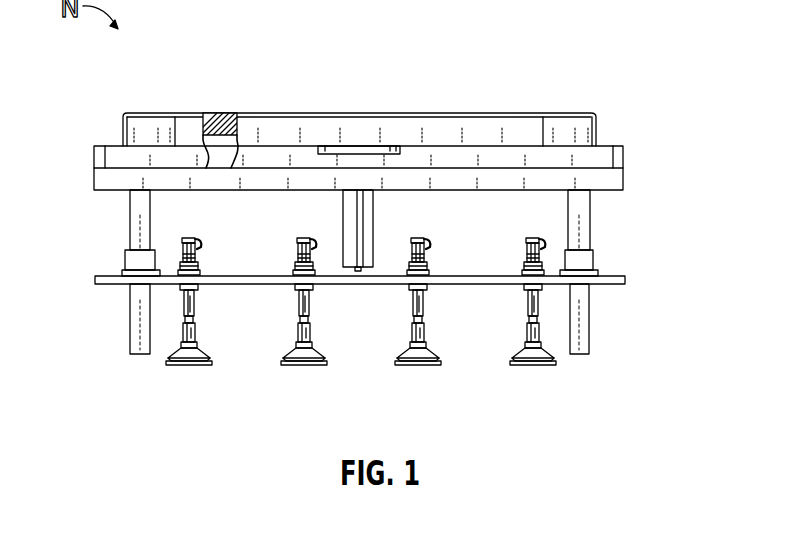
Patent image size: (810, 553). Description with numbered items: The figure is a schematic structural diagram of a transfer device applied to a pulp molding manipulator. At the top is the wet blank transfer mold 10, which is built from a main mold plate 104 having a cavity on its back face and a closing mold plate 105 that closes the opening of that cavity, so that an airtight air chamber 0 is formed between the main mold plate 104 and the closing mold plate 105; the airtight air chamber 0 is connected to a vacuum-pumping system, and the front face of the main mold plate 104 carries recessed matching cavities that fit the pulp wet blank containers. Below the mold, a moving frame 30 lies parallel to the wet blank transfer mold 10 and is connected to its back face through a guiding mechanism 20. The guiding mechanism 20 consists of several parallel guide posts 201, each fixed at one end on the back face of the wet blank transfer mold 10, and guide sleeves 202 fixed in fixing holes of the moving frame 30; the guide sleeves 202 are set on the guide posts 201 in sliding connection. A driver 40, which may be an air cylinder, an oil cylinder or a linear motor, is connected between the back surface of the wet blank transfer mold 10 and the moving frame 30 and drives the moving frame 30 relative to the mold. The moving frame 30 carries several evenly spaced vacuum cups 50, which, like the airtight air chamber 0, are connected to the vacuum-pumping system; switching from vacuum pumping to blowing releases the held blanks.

The airtight air chamber 0 is at (222, 148).
The wet blank transfer mold 10 is at (393, 108).
The main mold plate 104 is at (470, 133).
The closing mold plate 105 is at (377, 182).
The guiding mechanism 20 is at (353, 272).
The guide post 201 is at (140, 211).
The guide sleeve 202 is at (140, 258).
The moving frame 30 is at (268, 290).
The driver 40 is at (362, 233).
The vacuum cup 50 is at (418, 352).